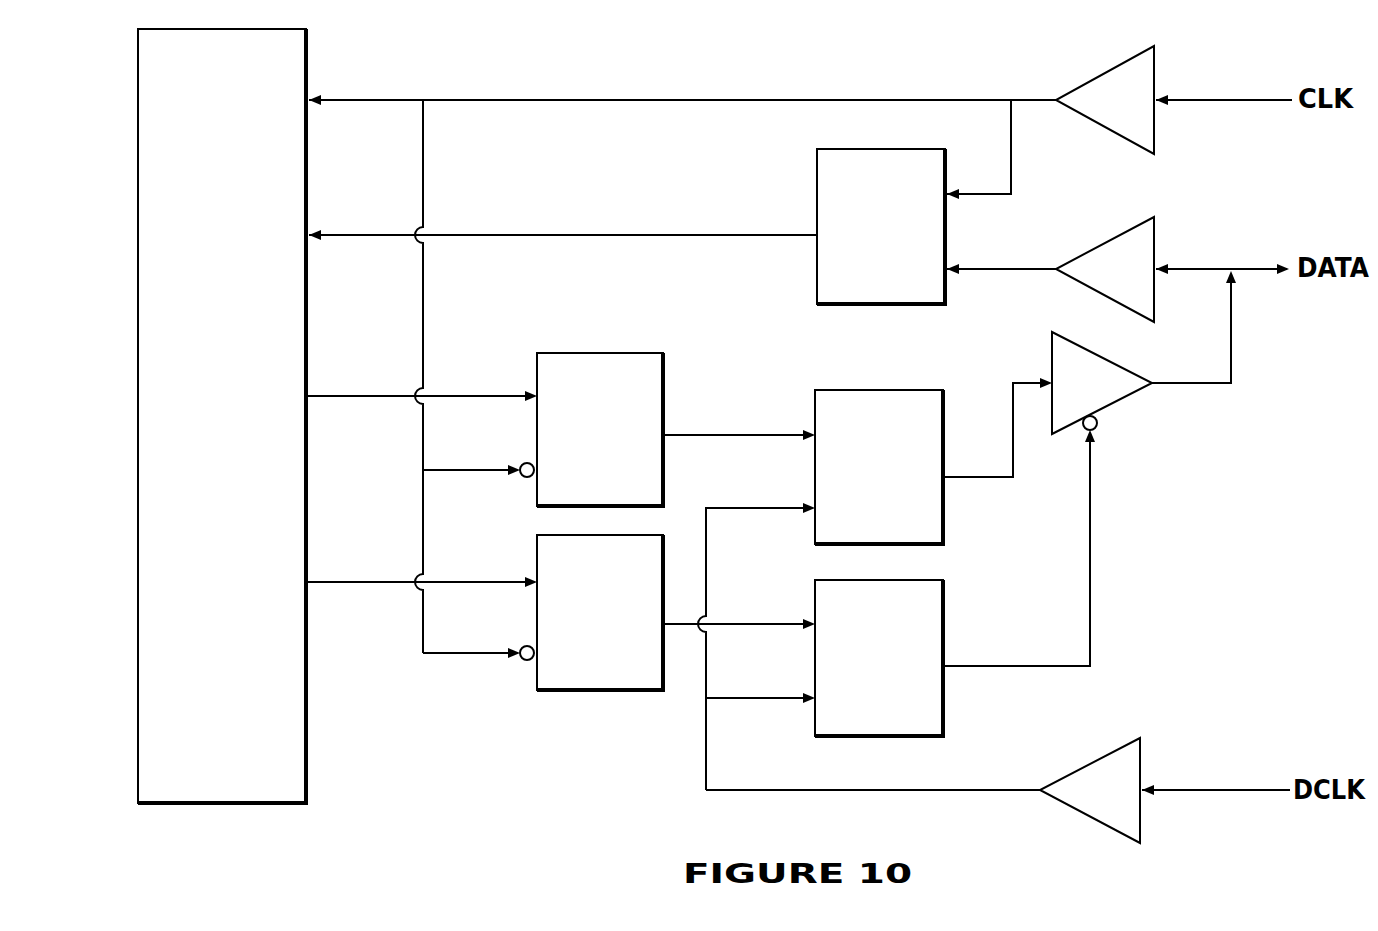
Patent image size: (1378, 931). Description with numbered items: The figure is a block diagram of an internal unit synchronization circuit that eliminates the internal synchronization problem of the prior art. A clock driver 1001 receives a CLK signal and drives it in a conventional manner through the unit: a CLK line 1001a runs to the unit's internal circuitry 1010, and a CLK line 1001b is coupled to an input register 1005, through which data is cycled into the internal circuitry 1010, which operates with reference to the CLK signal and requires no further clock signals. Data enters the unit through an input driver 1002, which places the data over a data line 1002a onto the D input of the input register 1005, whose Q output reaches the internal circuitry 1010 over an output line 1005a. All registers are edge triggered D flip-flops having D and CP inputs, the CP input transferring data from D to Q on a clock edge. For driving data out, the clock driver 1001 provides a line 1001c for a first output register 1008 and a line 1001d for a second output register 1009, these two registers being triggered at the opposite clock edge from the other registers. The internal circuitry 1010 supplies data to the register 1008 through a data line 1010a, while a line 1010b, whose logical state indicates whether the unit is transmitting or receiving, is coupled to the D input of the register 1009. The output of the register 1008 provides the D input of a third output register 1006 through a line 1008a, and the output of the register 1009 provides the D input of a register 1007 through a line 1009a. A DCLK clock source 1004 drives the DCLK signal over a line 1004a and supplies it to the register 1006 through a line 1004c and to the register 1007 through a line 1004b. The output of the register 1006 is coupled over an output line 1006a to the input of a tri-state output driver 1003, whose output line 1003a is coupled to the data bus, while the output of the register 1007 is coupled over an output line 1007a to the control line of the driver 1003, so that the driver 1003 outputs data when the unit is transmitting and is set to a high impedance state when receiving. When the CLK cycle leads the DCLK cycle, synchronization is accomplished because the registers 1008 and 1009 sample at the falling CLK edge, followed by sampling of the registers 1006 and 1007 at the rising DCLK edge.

The clock driver 1001 is at (1105, 100).
The CLK line 1001a is at (682, 86).
The CLK line 1001b is at (1021, 149).
The line 1001c is at (467, 376).
The line 1001d is at (471, 670).
The input driver 1002 is at (1105, 269).
The data line 1002a is at (1001, 256).
The tri-state output driver 1003 is at (1102, 383).
The output line 1003a is at (1194, 344).
The DCLK clock source 1004 is at (1090, 790).
The DCLK line 1004a is at (873, 774).
The line 1004b is at (760, 683).
The line 1004c is at (756, 632).
The input register 1005 is at (881, 226).
The output line 1005a is at (563, 219).
The third output register 1006 is at (879, 467).
The output line 1006a is at (997, 444).
The register 1007 is at (879, 658).
The output line 1007a is at (1019, 565).
The first output register 1008 is at (591, 429).
The line 1008a is at (739, 419).
The second output register 1009 is at (591, 612).
The line 1009a is at (739, 608).
The internal circuitry 1010 is at (222, 416).
The data line 1010a is at (422, 379).
The line 1010b is at (422, 565).